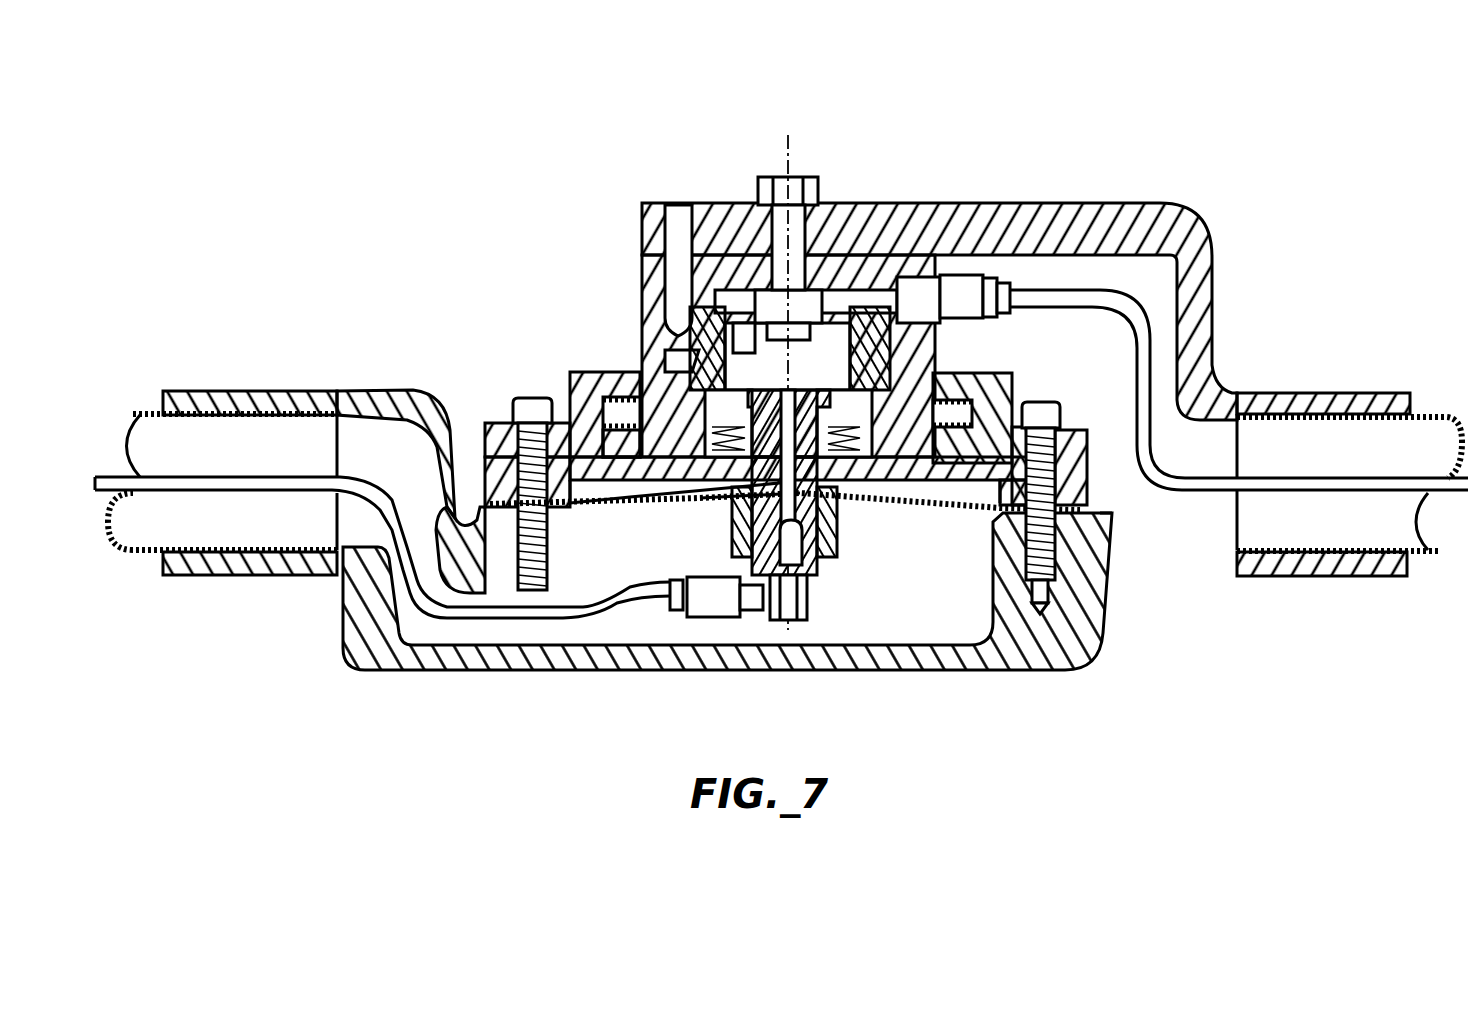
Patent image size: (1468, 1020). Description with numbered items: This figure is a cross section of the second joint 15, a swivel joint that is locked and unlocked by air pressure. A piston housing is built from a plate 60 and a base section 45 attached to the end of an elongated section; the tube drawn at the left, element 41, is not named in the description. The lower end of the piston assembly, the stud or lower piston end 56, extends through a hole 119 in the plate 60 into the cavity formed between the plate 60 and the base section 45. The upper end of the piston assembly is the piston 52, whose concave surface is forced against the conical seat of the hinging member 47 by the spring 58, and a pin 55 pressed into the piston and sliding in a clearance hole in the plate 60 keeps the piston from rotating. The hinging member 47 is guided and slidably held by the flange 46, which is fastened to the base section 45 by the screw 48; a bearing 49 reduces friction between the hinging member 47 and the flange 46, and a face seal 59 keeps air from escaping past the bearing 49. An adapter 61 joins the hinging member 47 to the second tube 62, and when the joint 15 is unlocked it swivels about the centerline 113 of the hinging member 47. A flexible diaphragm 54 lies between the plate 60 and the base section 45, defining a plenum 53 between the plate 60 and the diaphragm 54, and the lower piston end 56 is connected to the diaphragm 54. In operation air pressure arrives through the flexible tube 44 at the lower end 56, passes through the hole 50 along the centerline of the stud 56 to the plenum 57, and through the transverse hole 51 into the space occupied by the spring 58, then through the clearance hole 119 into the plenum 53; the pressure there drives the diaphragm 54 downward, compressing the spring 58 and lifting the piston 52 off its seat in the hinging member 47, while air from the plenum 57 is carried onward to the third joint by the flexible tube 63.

The second joint 15 is at (440, 290).
The inlet tube 41 is at (140, 411).
The flexible tube 44 is at (222, 470).
The base section 45 is at (353, 660).
The flange 46 is at (470, 520).
The hinging member 47 is at (642, 268).
The screw 48 is at (530, 397).
The bearing 49 is at (625, 372).
The hole 50 is at (822, 557).
The transverse hole 51 is at (777, 388).
The piston 52 is at (835, 330).
The plenum 53 is at (583, 497).
The diaphragm 54 is at (982, 510).
The pin 55 is at (667, 493).
The lower piston end 56 is at (765, 577).
The plenum 57 is at (835, 323).
The spring 58 is at (868, 493).
The face seal 59 is at (937, 483).
The plate 60 is at (1085, 510).
The adapter 61 is at (1355, 391).
The second tube 62 is at (1430, 413).
The flexible tube 63 is at (1410, 491).
The centerline 113 is at (785, 150).
The clearance hole 119 is at (700, 497).